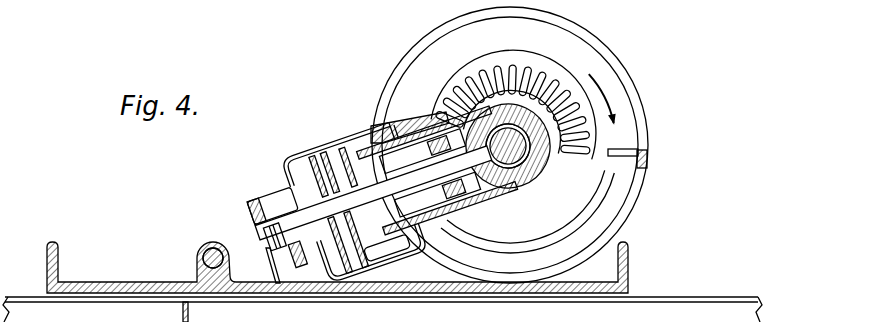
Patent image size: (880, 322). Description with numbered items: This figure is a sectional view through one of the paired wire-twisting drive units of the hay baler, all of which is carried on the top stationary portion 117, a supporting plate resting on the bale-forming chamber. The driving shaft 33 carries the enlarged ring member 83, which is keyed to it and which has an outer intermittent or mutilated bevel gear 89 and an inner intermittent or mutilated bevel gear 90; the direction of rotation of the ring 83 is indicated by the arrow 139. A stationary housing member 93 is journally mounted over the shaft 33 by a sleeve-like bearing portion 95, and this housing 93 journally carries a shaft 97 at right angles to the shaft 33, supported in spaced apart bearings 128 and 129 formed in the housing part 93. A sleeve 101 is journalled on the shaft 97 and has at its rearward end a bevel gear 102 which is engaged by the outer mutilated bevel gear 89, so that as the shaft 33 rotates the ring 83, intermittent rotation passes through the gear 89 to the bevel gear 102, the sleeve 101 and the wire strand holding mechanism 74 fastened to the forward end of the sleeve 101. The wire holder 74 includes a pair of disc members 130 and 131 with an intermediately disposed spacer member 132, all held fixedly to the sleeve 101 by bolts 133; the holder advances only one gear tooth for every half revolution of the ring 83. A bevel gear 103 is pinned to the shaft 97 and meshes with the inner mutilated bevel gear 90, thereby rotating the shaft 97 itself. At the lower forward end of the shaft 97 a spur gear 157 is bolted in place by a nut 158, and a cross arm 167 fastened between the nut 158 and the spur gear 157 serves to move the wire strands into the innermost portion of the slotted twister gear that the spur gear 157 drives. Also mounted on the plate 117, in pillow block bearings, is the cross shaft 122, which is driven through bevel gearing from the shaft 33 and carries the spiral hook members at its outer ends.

The top stationary portion 117 is at (101, 281).
The cross shaft 122 is at (201, 250).
The ring member 83 is at (614, 58).
The arrow 139 is at (607, 101).
The inner intermittent or mutilated bevel gear 90 is at (491, 62).
The housing member 93 is at (528, 192).
The outer intermittent or mutilated bevel gear 89 is at (384, 126).
The shaft 33 is at (530, 157).
The sleeve-like bearing portion 95 is at (522, 133).
The bevel gear 103 is at (452, 214).
The bearing 128 is at (488, 198).
The bearing 129 is at (283, 192).
The cross arm 167 is at (242, 197).
The nut 158 is at (260, 236).
The spur gear 157 is at (271, 260).
The wire strand holding mechanism 74 is at (290, 155).
The shaft 97 is at (357, 152).
The disc member 130 is at (313, 163).
The disc member 131 is at (333, 150).
The spacer member 132 is at (323, 140).
The bolts 133 is at (344, 258).
The sleeve 101 is at (388, 264).
The bevel gear 102 is at (426, 246).